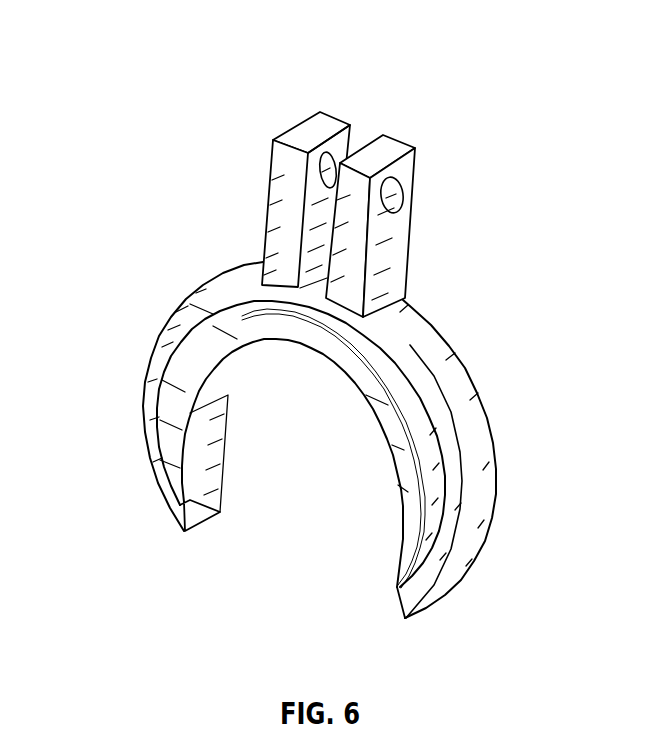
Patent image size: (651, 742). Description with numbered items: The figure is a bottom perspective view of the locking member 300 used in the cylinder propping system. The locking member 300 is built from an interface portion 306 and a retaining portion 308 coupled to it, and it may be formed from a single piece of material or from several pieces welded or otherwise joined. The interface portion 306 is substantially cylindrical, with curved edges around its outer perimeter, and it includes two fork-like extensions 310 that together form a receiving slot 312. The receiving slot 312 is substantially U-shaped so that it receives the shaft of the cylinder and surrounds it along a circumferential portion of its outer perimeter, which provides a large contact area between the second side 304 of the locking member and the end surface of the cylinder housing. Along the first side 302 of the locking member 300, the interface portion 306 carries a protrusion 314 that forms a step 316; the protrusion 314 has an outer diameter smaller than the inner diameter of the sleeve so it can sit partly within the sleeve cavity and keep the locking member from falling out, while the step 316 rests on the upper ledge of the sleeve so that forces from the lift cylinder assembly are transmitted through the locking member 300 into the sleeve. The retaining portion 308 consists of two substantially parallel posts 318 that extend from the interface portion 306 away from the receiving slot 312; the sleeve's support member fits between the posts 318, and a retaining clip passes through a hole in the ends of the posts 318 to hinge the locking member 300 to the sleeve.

The locking member 300 is at (106, 44).
The first side 302 is at (410, 599).
The second side 304 is at (464, 349).
The interface portion 306 is at (514, 403).
The retaining portion 308 is at (256, 146).
The extensions 310 is at (178, 508).
The receiving slot 312 is at (288, 552).
The protrusion 314 is at (165, 428).
The step 316 is at (172, 327).
The posts 318 is at (322, 127).